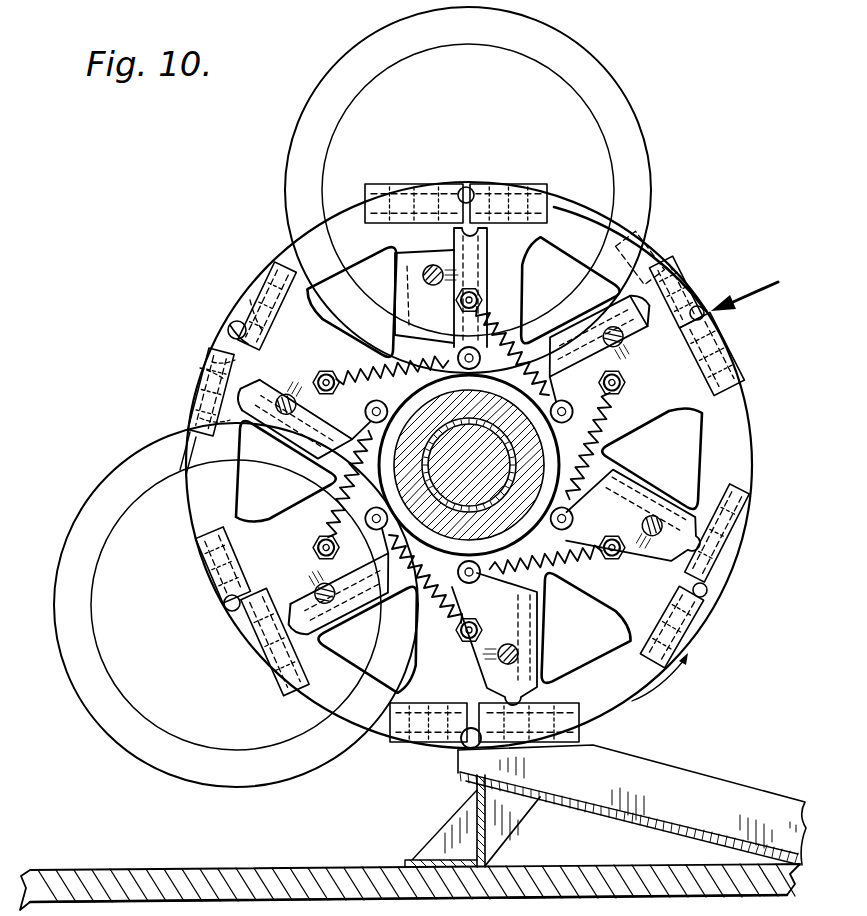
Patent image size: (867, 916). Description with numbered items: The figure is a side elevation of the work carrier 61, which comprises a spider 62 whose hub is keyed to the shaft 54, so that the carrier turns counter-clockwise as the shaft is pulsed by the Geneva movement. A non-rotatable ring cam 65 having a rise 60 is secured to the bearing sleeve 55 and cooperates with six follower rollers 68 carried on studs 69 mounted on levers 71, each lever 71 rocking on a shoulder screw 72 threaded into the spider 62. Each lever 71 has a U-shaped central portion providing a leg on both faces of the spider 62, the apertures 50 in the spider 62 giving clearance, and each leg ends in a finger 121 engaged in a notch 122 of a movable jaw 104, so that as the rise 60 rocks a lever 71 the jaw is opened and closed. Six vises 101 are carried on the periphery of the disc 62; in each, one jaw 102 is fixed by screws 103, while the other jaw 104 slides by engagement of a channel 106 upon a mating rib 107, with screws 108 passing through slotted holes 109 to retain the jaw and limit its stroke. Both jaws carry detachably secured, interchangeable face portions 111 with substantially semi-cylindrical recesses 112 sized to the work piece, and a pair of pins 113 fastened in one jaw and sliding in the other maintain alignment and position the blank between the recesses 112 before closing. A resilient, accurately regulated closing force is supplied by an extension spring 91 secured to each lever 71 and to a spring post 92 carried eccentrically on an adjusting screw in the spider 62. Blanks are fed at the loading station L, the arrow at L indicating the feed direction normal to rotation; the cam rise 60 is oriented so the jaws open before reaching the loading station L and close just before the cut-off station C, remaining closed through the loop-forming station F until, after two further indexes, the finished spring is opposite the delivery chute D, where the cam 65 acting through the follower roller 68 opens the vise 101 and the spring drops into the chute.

The apertures 50 is at (572, 258).
The shaft 54 is at (482, 449).
The bearing sleeve 55 is at (484, 411).
The rise 60 is at (560, 550).
The work carrier 61 is at (688, 257).
The spider 62 is at (335, 216).
The ring cam 65 is at (592, 347).
The follower rollers 68 is at (567, 402).
The studs 69 is at (588, 418).
The levers 71 is at (628, 346).
The shoulder screw 72 is at (618, 372).
The extension spring 91 is at (395, 350).
The spring post 92 is at (320, 368).
The vises 101 is at (228, 326).
The fixed jaw 102 is at (262, 285).
The screws 103 is at (250, 300).
The movable jaw 104 is at (200, 405).
The channel 106 is at (200, 418).
The rib 107 is at (196, 437).
The screws 108 is at (212, 362).
The slotted holes 109 is at (200, 368).
The face portions 111 is at (230, 325).
The recesses 112 is at (466, 187).
The pins 113 is at (487, 198).
The finger 121 is at (660, 262).
The notch 122 is at (691, 305).
The cut-off station C is at (637, 92).
The delivery chute D is at (662, 790).
The loop-forming station F is at (166, 770).
The loading station L is at (750, 286).